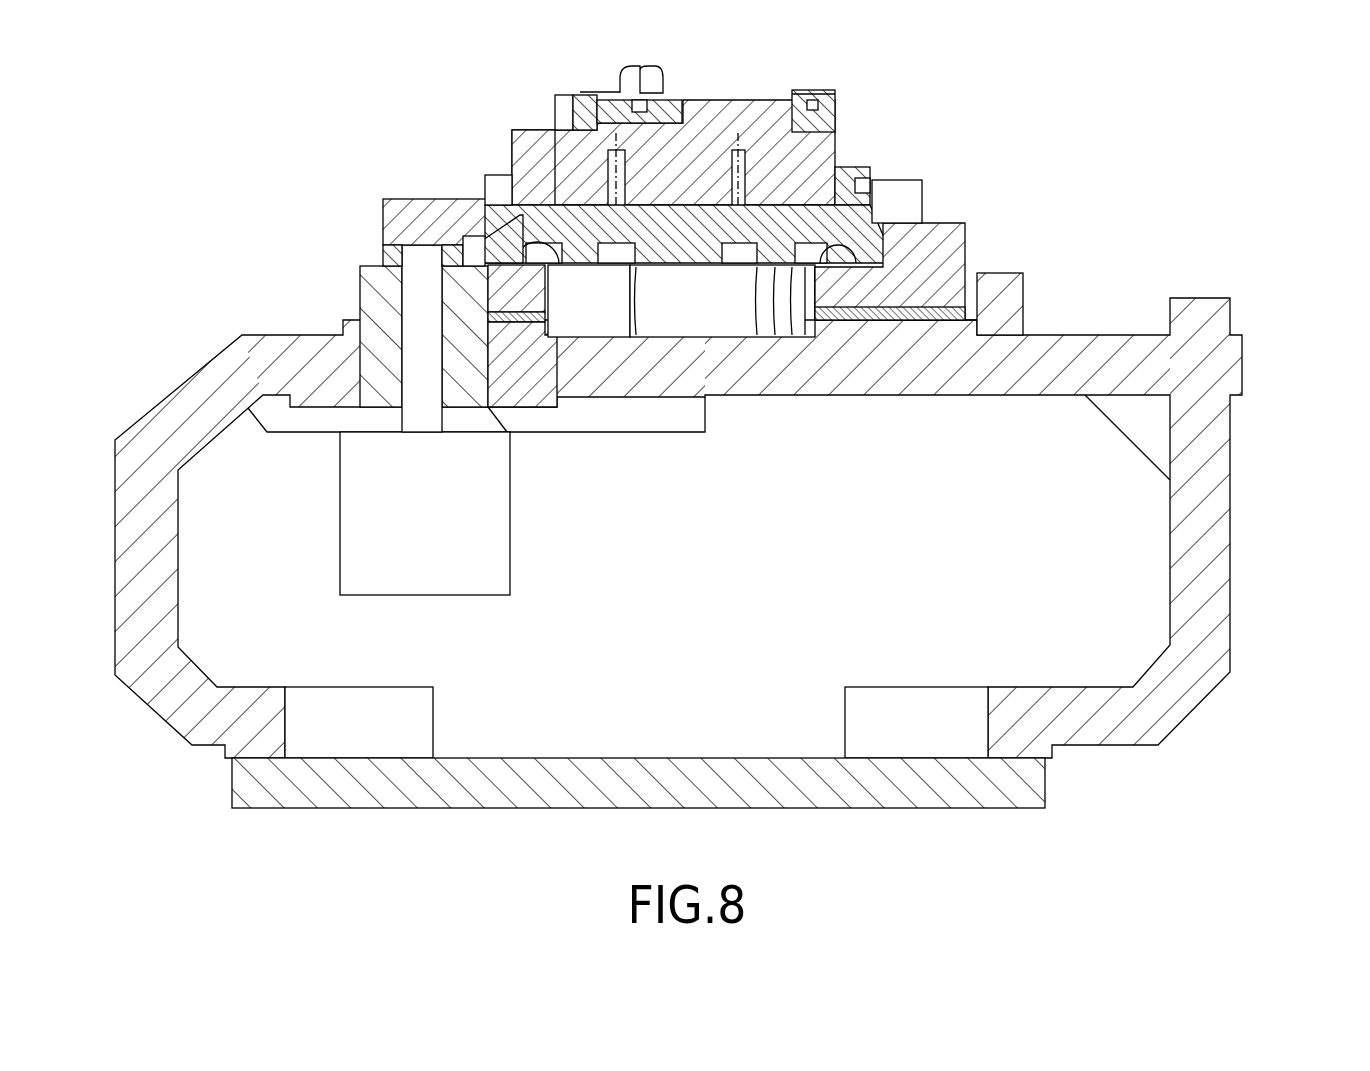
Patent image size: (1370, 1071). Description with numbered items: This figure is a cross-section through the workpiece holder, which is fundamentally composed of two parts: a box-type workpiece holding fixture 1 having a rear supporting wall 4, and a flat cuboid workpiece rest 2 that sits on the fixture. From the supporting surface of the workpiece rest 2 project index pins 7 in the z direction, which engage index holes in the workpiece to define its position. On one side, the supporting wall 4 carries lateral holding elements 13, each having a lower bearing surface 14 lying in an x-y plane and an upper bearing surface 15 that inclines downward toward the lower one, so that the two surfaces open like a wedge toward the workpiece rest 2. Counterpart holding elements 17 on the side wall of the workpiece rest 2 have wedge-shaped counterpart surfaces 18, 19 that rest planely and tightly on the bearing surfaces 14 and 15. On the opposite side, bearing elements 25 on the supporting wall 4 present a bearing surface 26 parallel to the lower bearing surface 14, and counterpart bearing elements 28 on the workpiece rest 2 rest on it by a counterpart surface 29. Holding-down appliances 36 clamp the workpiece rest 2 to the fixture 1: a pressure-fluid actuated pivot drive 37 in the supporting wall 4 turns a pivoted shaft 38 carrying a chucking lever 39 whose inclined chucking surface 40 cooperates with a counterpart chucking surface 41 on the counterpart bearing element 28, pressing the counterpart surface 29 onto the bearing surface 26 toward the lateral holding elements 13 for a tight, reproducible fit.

The workpiece holding fixture 1 is at (1240, 619).
The workpiece rest 2 is at (731, 100).
The supporting wall 4 is at (1208, 468).
The index pins 7 is at (632, 83).
The lateral holding elements 13 is at (950, 243).
The lower bearing surface 14 is at (883, 267).
The upper bearing surface 15 is at (920, 223).
The counterpart holding elements 17 is at (857, 167).
The counterpart surface 18 is at (807, 265).
The counterpart surface 19 is at (872, 232).
The bearing elements 25 is at (528, 285).
The bearing surface 26 is at (508, 270).
The counterpart bearing elements 28 is at (521, 207).
The counterpart surface 29 is at (562, 265).
The holding-down appliances 36 is at (385, 198).
The pressure-fluid actuated pivot drive 37 is at (392, 508).
The pivoted shaft 38 is at (420, 290).
The chucking lever 39 is at (410, 223).
The chucking surface 40 is at (486, 236).
The counterpart chucking surface 41 is at (512, 218).